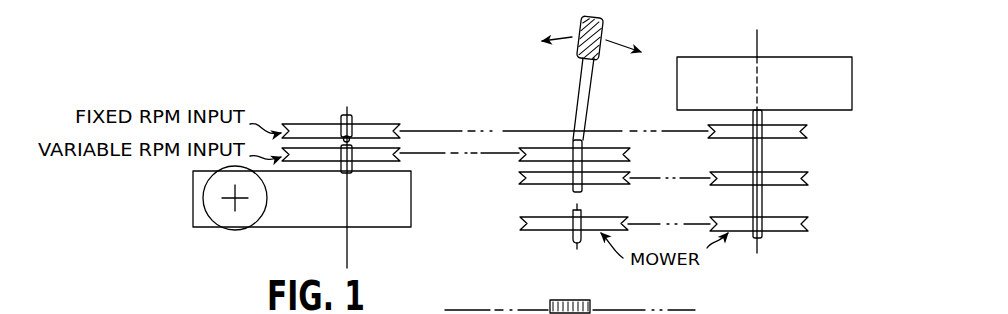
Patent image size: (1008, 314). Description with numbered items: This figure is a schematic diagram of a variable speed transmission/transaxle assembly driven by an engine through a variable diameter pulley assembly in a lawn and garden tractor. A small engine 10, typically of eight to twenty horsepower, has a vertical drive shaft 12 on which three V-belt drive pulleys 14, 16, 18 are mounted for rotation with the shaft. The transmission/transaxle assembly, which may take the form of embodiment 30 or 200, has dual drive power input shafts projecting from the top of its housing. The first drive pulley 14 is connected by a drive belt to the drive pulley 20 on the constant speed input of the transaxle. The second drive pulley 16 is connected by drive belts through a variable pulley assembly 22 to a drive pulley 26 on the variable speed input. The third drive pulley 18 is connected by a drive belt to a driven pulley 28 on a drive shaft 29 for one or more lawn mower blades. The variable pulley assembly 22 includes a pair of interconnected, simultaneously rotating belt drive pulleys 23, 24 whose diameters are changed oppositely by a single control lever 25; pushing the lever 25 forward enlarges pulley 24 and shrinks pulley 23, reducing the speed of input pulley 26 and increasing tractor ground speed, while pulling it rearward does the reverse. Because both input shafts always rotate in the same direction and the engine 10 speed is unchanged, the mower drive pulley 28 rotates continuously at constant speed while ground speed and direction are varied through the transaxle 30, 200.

The engine 10 is at (801, 63).
The vertical drive shaft 12 is at (763, 153).
The first drive pulley 14 is at (807, 131).
The second drive pulley 16 is at (808, 178).
The third drive pulley 18 is at (790, 231).
The drive pulley 20 is at (368, 134).
The variable pulley assembly 22 is at (539, 139).
The belt drive pulley 23 is at (632, 155).
The belt drive pulley 24 is at (618, 185).
The control lever 25 is at (603, 26).
The drive pulley 26 is at (378, 152).
The driven pulley 28 is at (530, 220).
The drive shaft 29 is at (571, 238).
The transmission/transaxle assembly 30 is at (302, 187).
The transmission/transaxle assembly 200 is at (282, 217).